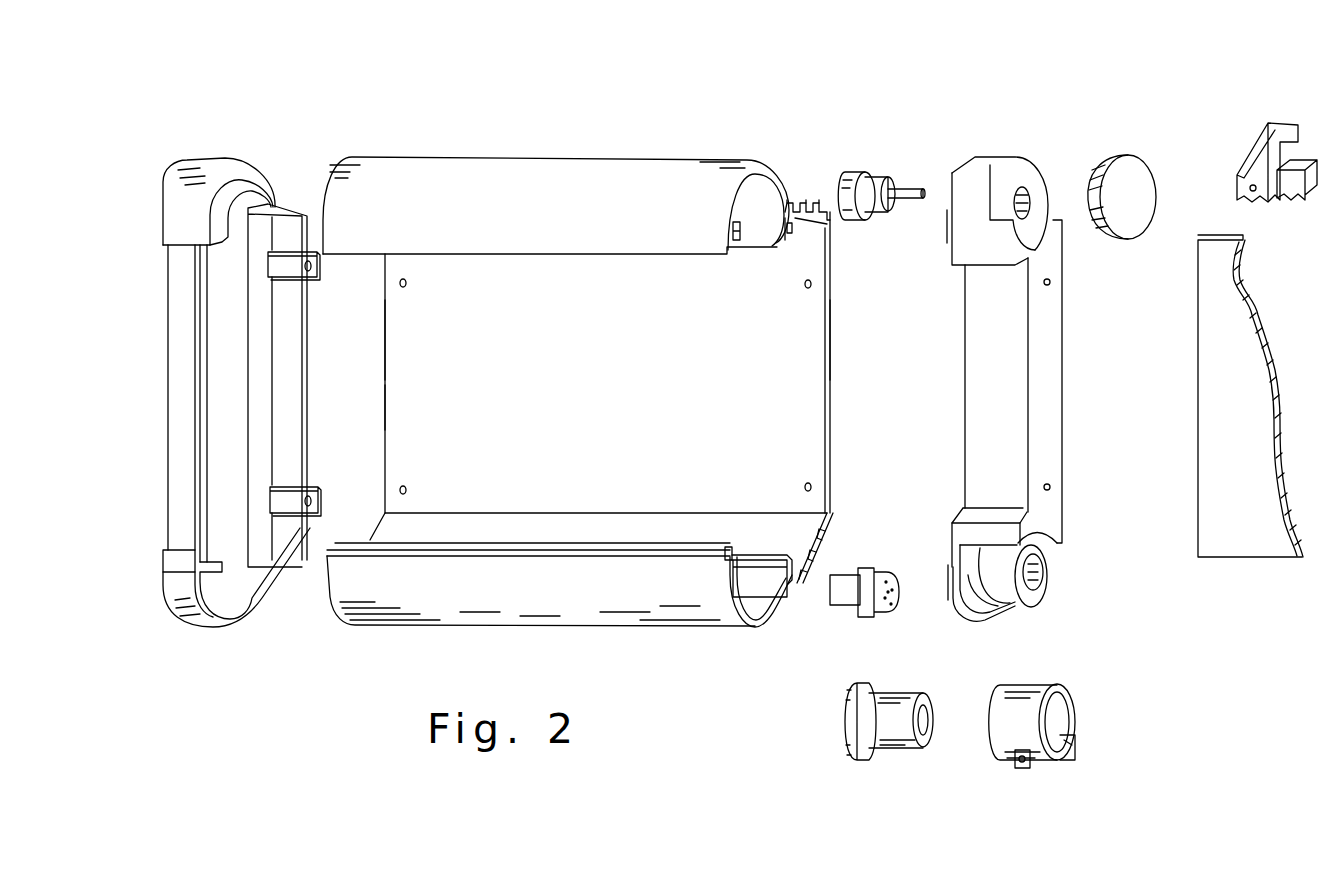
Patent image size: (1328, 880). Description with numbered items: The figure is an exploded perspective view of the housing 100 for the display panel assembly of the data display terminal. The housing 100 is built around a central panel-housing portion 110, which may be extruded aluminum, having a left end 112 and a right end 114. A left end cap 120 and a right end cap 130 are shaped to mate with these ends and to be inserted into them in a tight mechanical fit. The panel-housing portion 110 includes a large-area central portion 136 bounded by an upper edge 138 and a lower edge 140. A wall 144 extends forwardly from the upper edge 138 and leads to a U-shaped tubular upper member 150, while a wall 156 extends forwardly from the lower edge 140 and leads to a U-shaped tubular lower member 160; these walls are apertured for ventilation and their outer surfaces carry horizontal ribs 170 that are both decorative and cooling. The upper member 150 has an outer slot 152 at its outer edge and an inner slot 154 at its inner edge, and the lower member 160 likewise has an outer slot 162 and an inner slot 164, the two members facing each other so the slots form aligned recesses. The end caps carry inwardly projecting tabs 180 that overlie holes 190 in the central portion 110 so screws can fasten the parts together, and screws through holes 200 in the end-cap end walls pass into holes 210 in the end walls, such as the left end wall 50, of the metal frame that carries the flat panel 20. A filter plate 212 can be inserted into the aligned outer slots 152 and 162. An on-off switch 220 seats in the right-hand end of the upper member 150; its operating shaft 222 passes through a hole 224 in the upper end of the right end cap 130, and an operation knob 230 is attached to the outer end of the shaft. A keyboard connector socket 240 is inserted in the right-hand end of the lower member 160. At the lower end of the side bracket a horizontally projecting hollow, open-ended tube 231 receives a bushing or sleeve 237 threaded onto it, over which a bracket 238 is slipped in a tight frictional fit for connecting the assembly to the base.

The housing 100 is at (412, 100).
The central panel-housing portion 110 is at (603, 426).
The left end 112 is at (385, 340).
The right end 114 is at (835, 340).
The left end cap 120 is at (166, 296).
The right end cap 130 is at (1050, 408).
The large-area central portion 136 is at (412, 397).
The upper edge 138 is at (826, 222).
The lower edge 140 is at (834, 520).
The wall 144 is at (795, 203).
The U-shaped tubular upper member 150 is at (546, 176).
The outer slot 152 is at (736, 242).
The inner slot 154 is at (792, 236).
The wall 156 is at (830, 538).
The U-shaped tubular lower member 160 is at (490, 608).
The outer slot 162 is at (728, 546).
The inner slot 164 is at (792, 524).
The horizontal ribs 170 is at (812, 202).
The inwardly projecting tabs 180 is at (320, 502).
The holes 190 is at (400, 284).
The holes 200 is at (1050, 283).
The holes 210 is at (1250, 188).
The filter plate 212 is at (1203, 236).
The on-off switch 220 is at (848, 172).
The operating shaft 222 is at (910, 188).
The hole 224 is at (1022, 190).
The operation knob 230 is at (1135, 185).
The hollow, open-ended tube 231 is at (1000, 610).
The bushing or sleeve 237 is at (878, 740).
The bracket 238 is at (1040, 683).
The keyboard connector socket 240 is at (1038, 596).
The flat panel 20 is at (1312, 160).
The left end wall 50 is at (1262, 135).